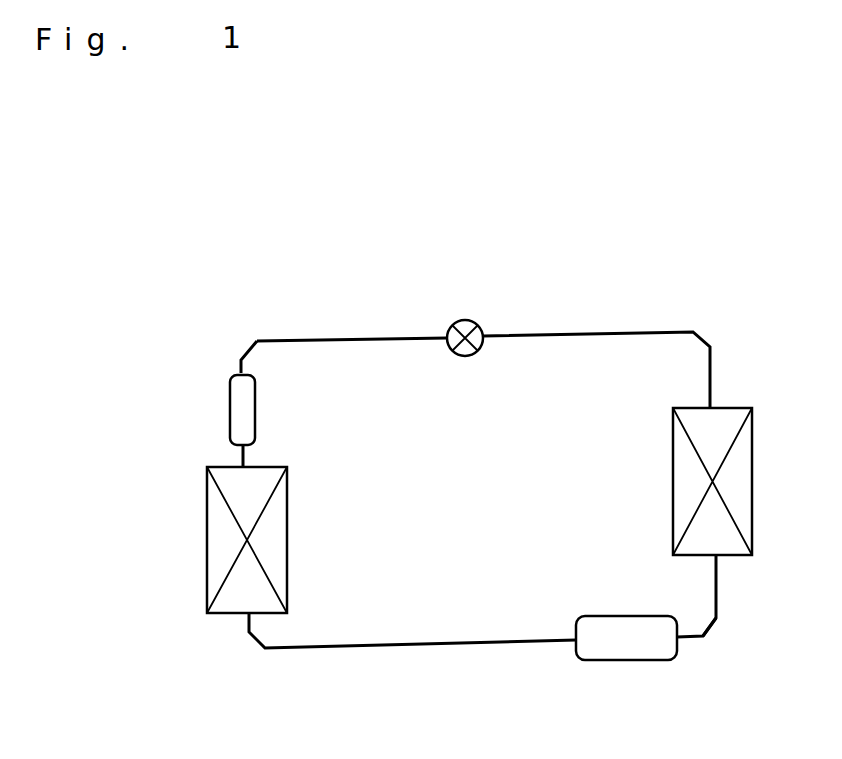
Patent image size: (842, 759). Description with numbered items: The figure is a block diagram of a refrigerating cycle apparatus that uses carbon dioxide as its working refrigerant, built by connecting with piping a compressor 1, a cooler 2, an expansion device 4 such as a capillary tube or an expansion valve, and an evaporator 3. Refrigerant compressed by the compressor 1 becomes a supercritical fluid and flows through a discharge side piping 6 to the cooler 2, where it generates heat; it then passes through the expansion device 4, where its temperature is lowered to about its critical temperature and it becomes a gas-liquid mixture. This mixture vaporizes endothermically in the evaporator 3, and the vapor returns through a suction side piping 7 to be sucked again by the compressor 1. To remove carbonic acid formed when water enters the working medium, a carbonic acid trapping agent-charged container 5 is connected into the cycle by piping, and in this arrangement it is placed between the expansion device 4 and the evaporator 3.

The compressor 1 is at (628, 662).
The cooler 2 is at (735, 408).
The evaporator 3 is at (223, 617).
The expansion device 4 is at (456, 319).
The carbonic acid trapping agent-charged container 5 is at (233, 375).
The discharge side piping 6 is at (705, 640).
The suction side piping 7 is at (528, 643).